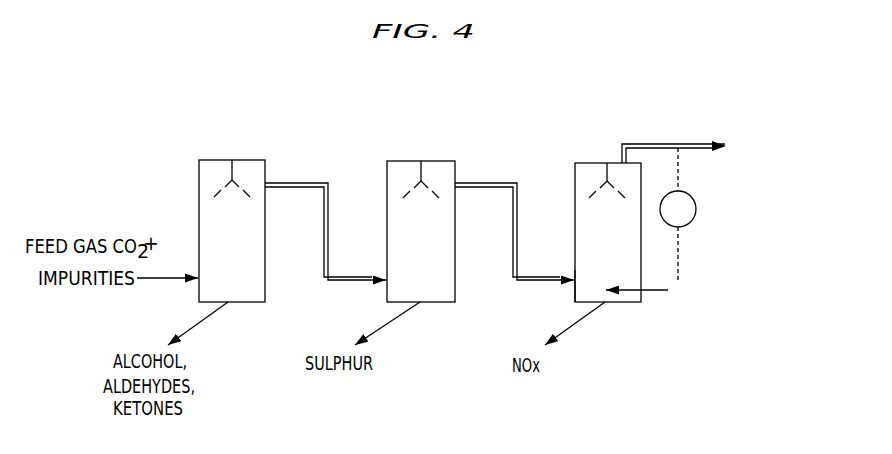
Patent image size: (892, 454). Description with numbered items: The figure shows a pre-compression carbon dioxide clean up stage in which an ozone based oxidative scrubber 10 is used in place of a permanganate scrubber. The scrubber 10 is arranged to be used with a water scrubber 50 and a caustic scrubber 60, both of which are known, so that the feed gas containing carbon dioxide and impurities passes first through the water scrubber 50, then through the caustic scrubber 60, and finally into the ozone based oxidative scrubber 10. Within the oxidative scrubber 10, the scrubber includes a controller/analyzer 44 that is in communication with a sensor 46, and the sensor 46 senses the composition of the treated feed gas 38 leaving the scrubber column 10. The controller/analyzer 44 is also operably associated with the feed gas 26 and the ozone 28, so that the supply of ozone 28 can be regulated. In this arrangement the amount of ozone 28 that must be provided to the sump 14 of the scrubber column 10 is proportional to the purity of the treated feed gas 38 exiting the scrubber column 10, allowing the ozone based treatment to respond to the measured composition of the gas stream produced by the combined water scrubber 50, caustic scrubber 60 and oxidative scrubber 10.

The ozone based oxidative scrubber 10 is at (562, 190).
The sump 14 is at (573, 293).
The feed gas 26 is at (651, 295).
The ozone 28 is at (648, 293).
The treated feed gas 38 is at (650, 144).
The controller/analyzer 44 is at (697, 210).
The sensor 46 is at (680, 144).
The water scrubber 50 is at (187, 187).
The caustic scrubber 60 is at (372, 188).